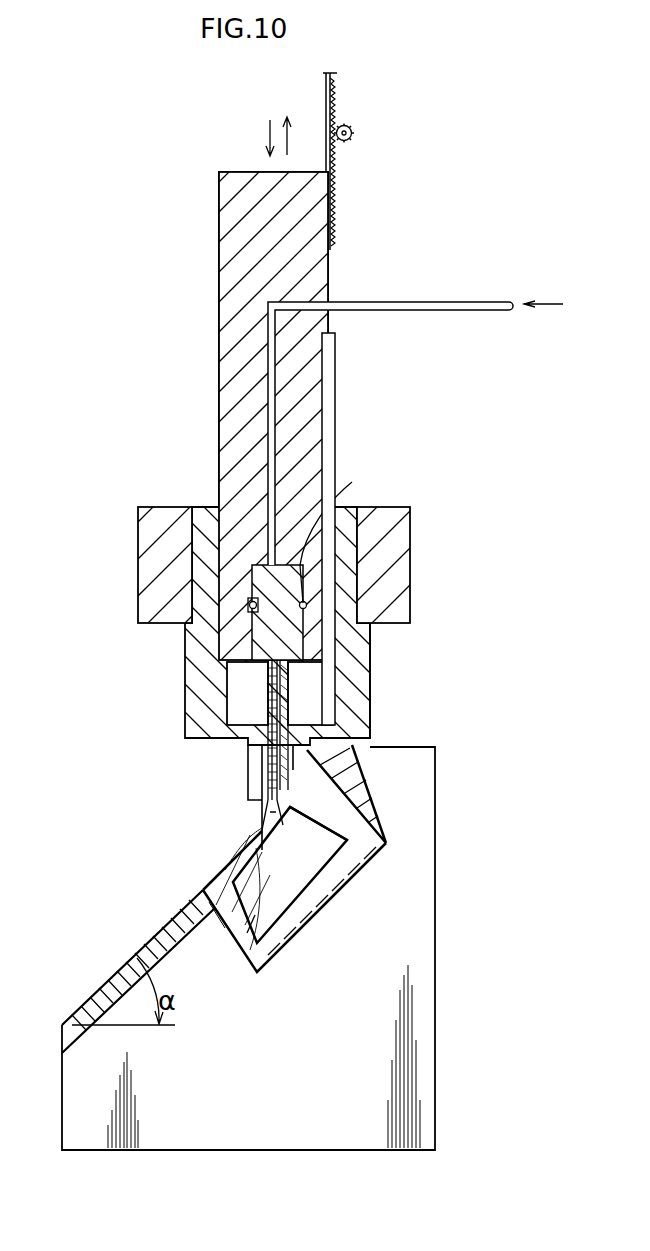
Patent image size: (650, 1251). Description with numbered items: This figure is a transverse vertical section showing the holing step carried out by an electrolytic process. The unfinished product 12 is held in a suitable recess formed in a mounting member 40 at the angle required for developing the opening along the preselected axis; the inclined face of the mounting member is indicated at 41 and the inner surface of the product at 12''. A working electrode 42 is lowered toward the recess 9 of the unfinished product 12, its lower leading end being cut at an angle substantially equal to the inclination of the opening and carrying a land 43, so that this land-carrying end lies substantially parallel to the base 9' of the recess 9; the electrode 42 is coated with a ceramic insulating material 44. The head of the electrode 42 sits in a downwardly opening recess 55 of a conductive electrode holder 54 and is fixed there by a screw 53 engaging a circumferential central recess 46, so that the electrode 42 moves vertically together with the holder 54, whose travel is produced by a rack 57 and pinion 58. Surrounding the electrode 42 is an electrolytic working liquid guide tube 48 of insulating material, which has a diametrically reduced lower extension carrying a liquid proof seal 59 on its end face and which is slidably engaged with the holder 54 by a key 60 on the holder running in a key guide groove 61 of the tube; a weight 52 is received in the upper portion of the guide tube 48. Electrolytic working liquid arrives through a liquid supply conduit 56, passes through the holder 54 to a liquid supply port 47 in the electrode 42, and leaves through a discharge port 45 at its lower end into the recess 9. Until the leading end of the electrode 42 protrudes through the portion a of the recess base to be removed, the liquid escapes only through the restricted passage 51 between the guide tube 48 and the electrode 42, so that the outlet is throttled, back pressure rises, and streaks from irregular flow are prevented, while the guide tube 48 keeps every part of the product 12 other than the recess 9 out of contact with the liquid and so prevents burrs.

The recess 9 is at (348, 794).
The base of recess 9' is at (181, 878).
The unfinished product 12 is at (250, 900).
The cup bottom 12'' is at (304, 890).
The mounting member 40 is at (62, 1105).
The inclined plate 41 is at (213, 921).
The working electrode 42 is at (292, 684).
The land 43 is at (262, 782).
The ceramic insulating material 44 is at (315, 725).
The discharge port 45 is at (318, 802).
The circumferential central recess 46 is at (343, 529).
The liquid supply port 47 is at (253, 610).
The electrolytic working liquid guide tube 48 is at (185, 708).
The restricted passage 51 is at (260, 748).
The weight 52 is at (396, 556).
The screw 53 is at (300, 634).
The electrode holder 54 is at (312, 421).
The downwardly opening recess 55 is at (247, 640).
The liquid supply conduit 56 is at (418, 302).
The rack 57 is at (337, 225).
The pinion 58 is at (352, 140).
The liquid proof seal 59 is at (256, 802).
The key 60 is at (334, 352).
The key guide groove 61 is at (372, 728).
The portion of the base of recess to be removed a is at (247, 933).